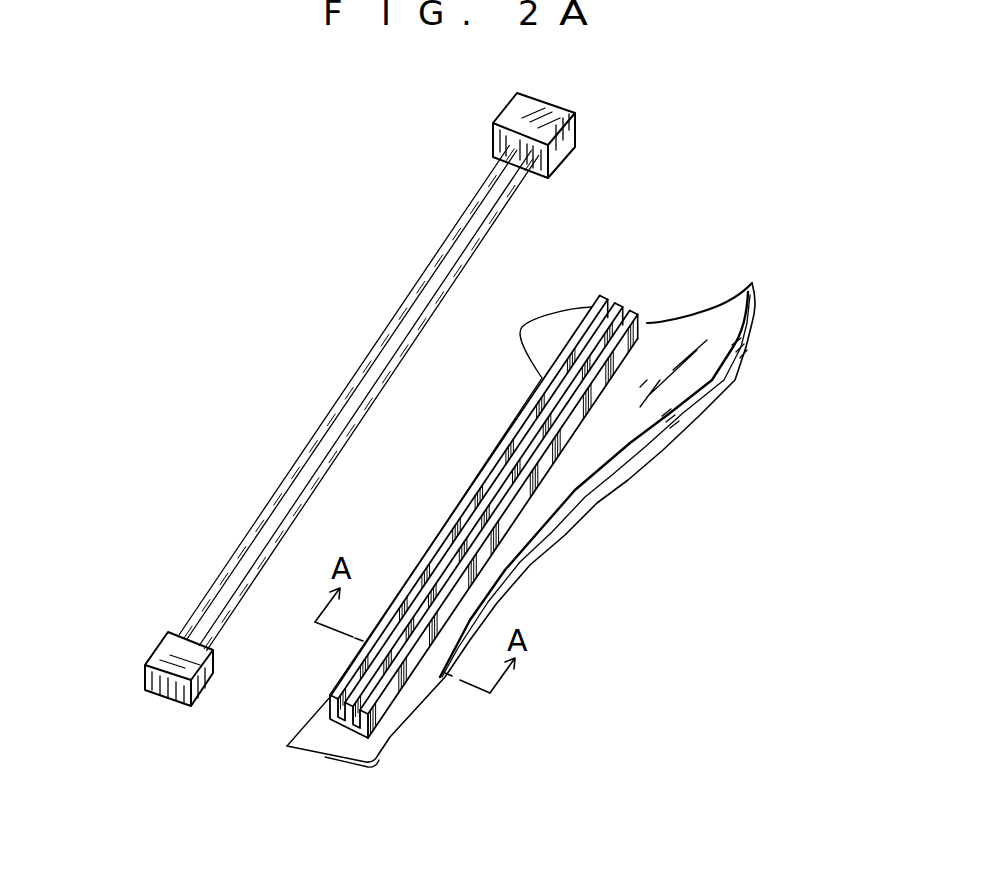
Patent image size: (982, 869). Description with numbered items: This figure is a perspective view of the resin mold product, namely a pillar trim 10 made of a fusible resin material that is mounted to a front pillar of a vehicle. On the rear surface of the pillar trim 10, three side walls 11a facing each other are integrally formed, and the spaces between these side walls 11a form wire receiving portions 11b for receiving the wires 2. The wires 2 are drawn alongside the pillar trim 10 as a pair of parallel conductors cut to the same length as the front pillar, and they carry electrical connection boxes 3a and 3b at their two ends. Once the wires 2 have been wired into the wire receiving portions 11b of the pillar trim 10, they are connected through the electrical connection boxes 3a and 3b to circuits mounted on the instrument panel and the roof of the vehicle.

The wires 2 is at (422, 322).
The electrical connection box 3a is at (160, 650).
The electrical connection box 3b is at (570, 138).
The pillar trim 10 is at (578, 550).
The side walls 11a is at (378, 708).
The wire receiving portions 11b is at (350, 727).